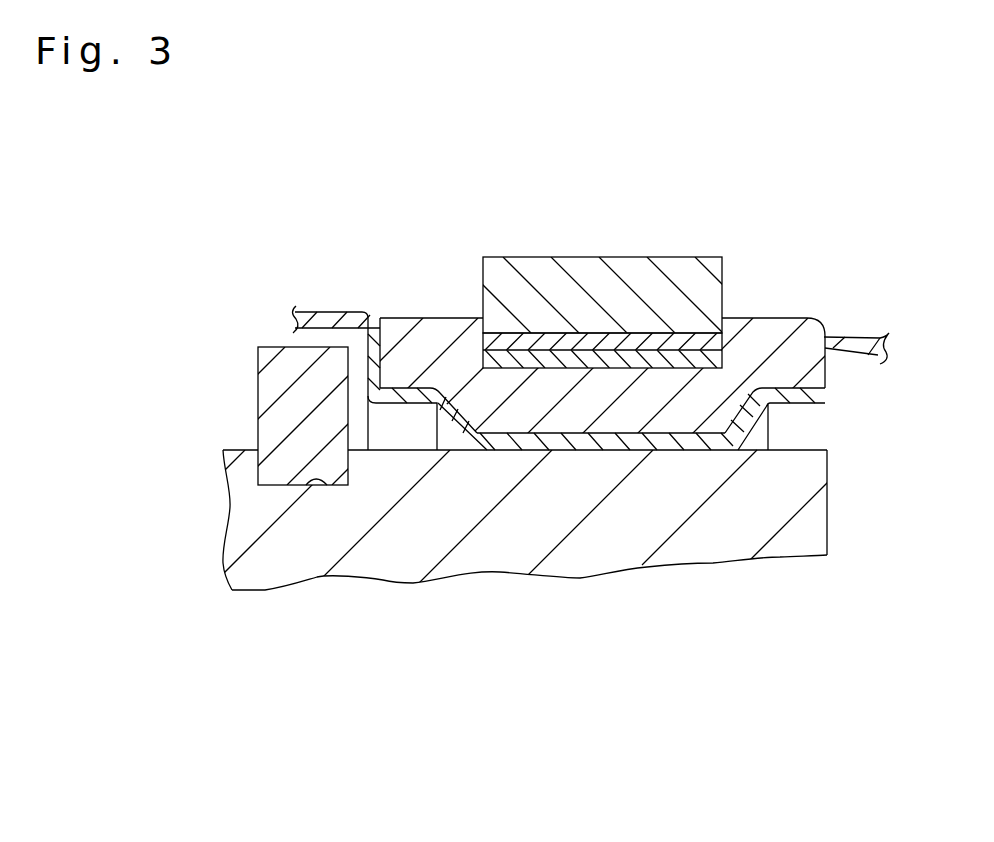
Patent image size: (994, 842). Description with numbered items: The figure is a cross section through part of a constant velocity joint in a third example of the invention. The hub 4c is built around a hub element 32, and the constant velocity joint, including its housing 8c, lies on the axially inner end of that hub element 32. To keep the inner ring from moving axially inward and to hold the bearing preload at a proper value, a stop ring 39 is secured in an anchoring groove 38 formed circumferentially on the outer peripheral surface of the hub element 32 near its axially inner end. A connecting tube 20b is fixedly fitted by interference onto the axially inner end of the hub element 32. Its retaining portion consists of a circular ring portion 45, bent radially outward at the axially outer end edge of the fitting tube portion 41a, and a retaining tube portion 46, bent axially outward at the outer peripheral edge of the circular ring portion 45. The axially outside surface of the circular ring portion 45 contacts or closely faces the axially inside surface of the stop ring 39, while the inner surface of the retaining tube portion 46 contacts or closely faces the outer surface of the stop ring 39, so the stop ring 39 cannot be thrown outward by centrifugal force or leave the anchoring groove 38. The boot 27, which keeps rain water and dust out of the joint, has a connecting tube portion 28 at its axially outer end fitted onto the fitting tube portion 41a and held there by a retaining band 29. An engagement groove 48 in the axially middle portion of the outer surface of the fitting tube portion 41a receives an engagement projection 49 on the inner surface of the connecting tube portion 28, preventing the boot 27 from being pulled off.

The boot 27 is at (765, 335).
The connecting tube portion 28 is at (560, 425).
The retaining band 29 is at (652, 290).
The hub element 32 is at (248, 543).
The stop ring 39 is at (277, 417).
The retaining tube portion 46 is at (352, 313).
The circular ring portion 45 is at (377, 350).
The anchoring groove 38 is at (328, 487).
The fitting tube portion 41a is at (503, 443).
The connecting tube 20b is at (583, 447).
The engagement projection 49 is at (641, 437).
The housing 8c is at (687, 521).
The engagement groove 48 is at (667, 437).
The hub 4c is at (278, 593).